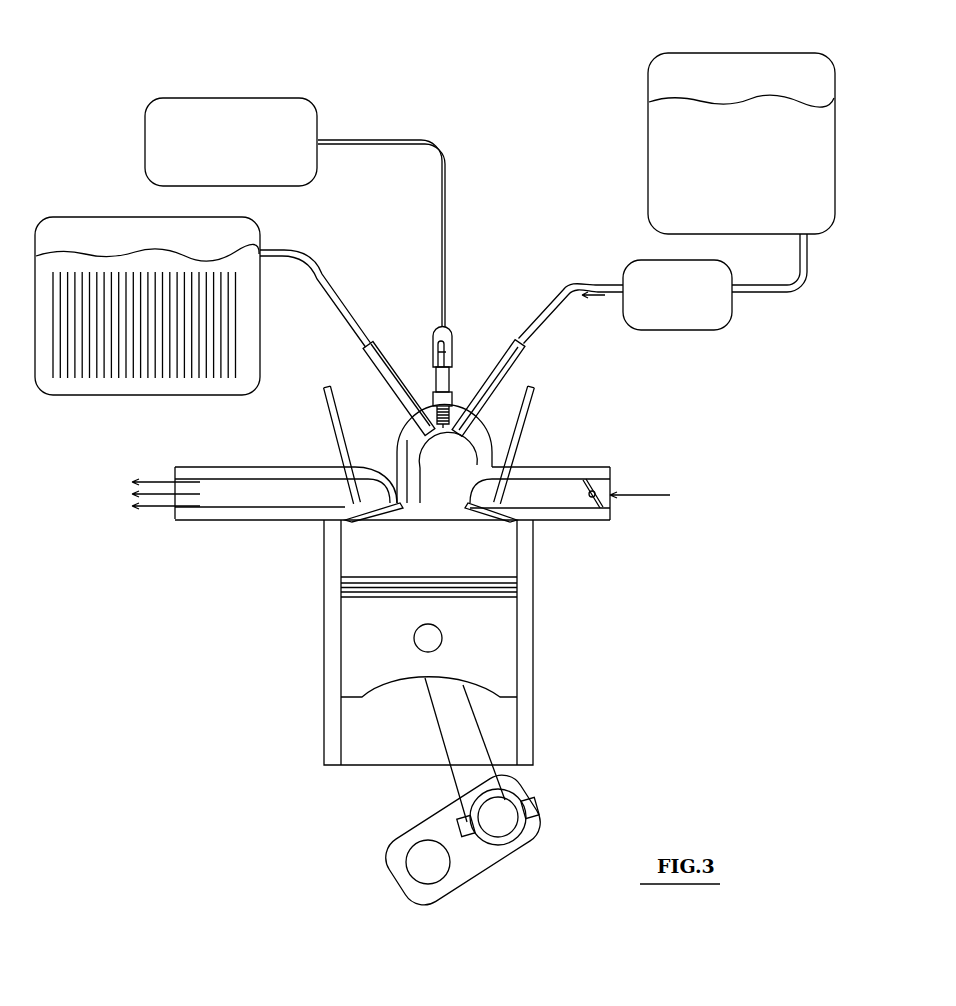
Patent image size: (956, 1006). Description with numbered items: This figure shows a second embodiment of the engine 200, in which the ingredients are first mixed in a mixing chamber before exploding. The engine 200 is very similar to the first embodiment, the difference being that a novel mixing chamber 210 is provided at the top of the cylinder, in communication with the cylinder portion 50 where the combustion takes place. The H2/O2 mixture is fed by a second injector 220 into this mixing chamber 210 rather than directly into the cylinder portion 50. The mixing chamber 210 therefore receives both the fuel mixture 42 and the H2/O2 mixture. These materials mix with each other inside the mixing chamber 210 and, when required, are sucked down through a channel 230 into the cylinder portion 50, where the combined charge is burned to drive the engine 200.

The engine 200 is at (410, 28).
The fuel mixture 42 is at (671, 66).
The second injector 220 is at (402, 393).
The mixing chamber 210 is at (420, 450).
The channel 230 is at (413, 493).
The cylinder portion 50 is at (425, 510).